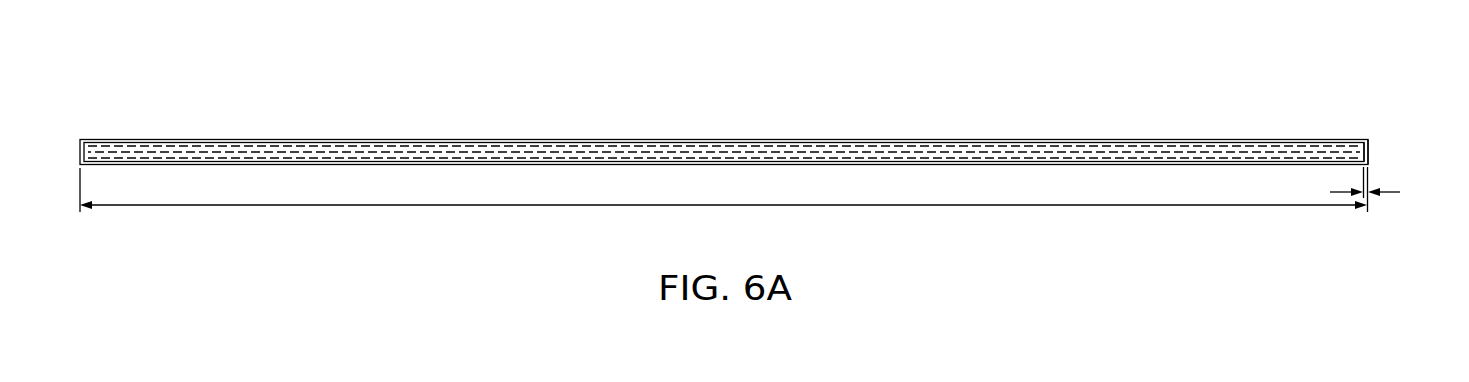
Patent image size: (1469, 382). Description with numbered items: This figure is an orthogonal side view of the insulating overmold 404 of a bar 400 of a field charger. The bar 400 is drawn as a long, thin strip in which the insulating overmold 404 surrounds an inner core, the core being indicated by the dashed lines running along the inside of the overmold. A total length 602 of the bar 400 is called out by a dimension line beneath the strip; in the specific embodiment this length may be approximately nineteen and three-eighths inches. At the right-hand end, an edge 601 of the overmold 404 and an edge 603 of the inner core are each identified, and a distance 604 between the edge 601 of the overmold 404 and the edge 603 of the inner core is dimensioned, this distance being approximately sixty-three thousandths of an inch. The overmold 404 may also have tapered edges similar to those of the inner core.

The bar 400 is at (737, 105).
The insulating overmold 404 is at (385, 139).
The edge of the overmold 601 is at (1368, 152).
The total length 602 is at (723, 206).
The edge of the inner core 603 is at (1368, 141).
The distance 604 is at (1387, 193).